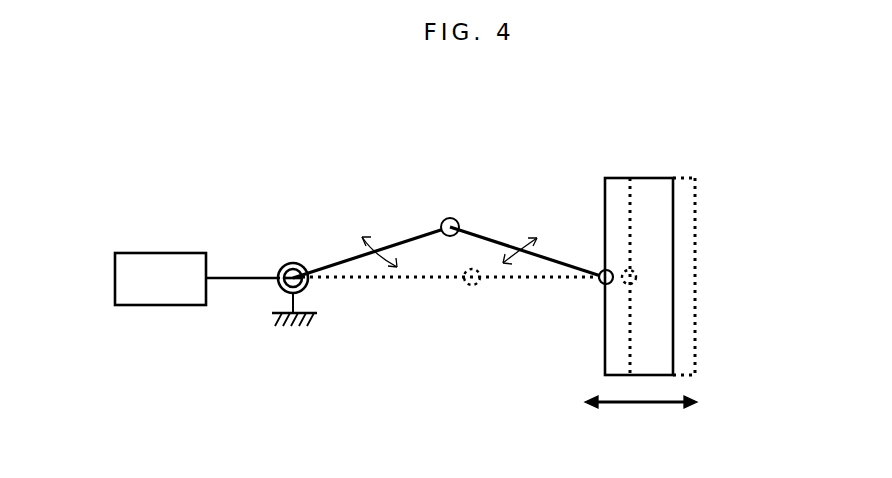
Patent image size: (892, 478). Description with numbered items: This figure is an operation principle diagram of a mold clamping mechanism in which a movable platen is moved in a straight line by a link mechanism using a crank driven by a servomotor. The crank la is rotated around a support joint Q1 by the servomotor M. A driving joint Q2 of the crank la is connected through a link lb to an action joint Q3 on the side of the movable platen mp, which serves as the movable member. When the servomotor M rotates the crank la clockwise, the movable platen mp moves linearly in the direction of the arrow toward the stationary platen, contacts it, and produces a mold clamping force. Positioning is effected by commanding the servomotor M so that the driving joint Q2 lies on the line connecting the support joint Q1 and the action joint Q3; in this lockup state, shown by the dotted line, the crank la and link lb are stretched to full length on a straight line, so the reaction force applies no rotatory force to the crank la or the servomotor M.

The servomotor M is at (197, 279).
The support joint Q1 is at (295, 263).
The driving joint Q2 is at (453, 218).
The action joint Q3 is at (600, 283).
The crank la is at (342, 263).
The link lb is at (484, 236).
The movable platen mp is at (647, 190).